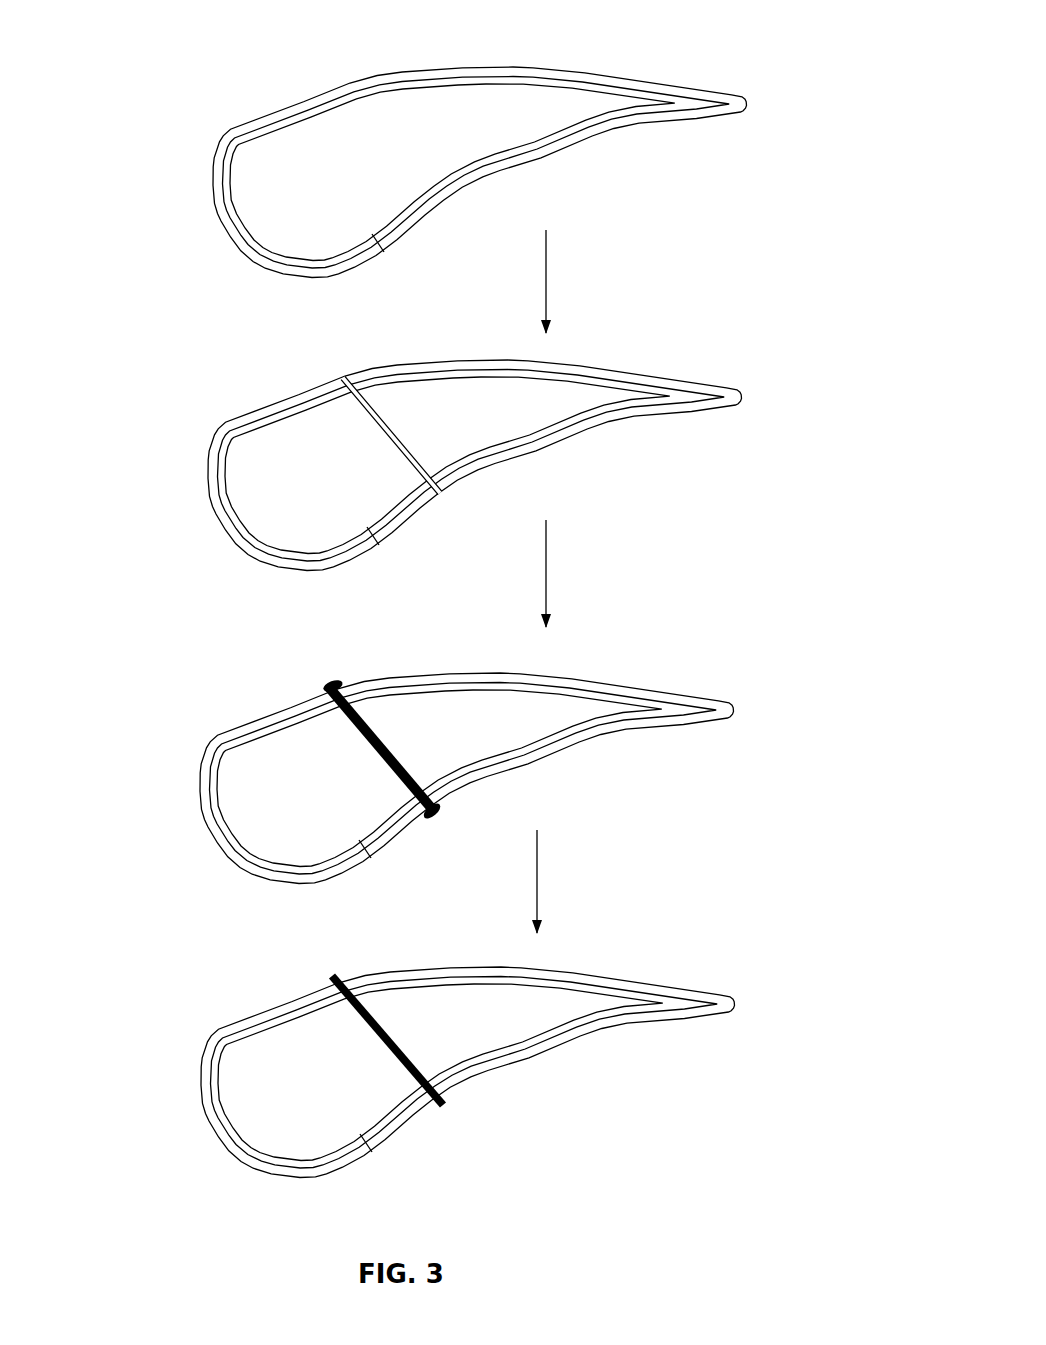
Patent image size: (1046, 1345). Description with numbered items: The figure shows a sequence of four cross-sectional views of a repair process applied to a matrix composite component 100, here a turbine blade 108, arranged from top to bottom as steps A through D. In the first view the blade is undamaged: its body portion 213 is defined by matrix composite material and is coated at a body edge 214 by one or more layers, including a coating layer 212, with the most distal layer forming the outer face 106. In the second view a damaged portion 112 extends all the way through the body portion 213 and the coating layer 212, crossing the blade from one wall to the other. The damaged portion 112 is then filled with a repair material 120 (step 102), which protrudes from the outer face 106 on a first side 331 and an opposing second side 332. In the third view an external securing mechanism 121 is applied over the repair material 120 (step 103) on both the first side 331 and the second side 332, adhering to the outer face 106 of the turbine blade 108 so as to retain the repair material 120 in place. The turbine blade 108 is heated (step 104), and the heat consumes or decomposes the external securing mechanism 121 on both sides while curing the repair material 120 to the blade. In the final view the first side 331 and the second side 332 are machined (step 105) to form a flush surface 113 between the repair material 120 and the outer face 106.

The matrix composite component 100 is at (173, 143).
The filling step 102 is at (546, 540).
The securing step 103 is at (546, 590).
The heating step 104 is at (537, 857).
The machining step 105 is at (537, 903).
The outer face 106 is at (600, 73).
The turbine blade 108 is at (762, 78).
The damaged portion 112 is at (440, 493).
The flush surface 113 is at (327, 972).
The repair material 120 is at (455, 772).
The external securing mechanism 121 is at (334, 682).
The coating layer 212 is at (368, 252).
The body portion 213 is at (312, 806).
The body edge 214 is at (552, 132).
The first side 331 is at (400, 830).
The second side 332 is at (307, 697).